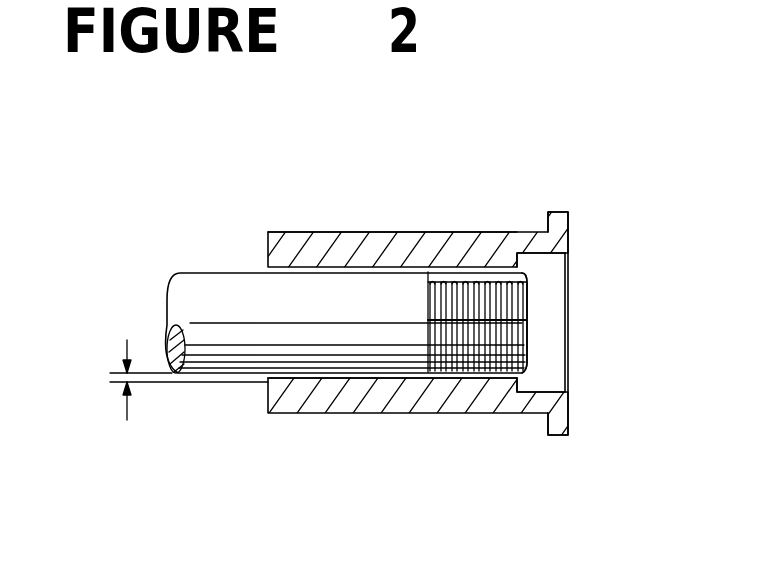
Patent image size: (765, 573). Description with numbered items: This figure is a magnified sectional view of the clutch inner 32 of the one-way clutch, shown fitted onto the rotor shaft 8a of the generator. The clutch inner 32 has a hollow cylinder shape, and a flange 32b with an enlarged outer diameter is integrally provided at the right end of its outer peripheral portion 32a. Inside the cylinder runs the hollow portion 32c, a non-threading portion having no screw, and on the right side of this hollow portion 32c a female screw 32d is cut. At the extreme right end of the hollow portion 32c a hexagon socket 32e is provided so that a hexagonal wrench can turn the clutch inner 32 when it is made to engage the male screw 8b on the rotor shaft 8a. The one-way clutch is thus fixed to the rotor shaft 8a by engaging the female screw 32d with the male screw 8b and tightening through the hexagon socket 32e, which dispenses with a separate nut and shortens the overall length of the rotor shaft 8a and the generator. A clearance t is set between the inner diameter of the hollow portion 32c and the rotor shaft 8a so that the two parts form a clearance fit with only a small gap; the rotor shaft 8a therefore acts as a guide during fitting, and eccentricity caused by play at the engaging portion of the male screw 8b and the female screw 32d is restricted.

The rotor shaft 8a is at (198, 273).
The male screw 8b is at (527, 310).
The clutch inner 32 is at (323, 232).
The outer peripheral portion 32a is at (437, 232).
The flange 32b is at (560, 212).
The hollow portion 32c is at (330, 378).
The female screw 32d is at (456, 362).
The hexagon socket 32e is at (555, 376).
The clearance t is at (107, 381).